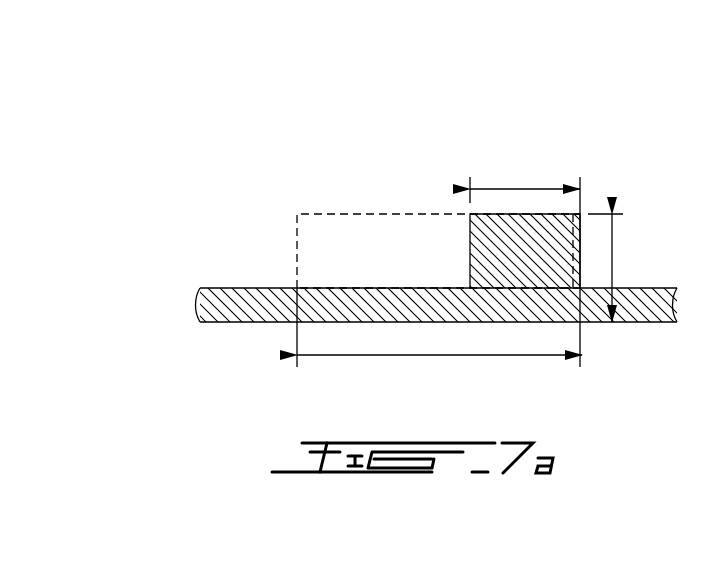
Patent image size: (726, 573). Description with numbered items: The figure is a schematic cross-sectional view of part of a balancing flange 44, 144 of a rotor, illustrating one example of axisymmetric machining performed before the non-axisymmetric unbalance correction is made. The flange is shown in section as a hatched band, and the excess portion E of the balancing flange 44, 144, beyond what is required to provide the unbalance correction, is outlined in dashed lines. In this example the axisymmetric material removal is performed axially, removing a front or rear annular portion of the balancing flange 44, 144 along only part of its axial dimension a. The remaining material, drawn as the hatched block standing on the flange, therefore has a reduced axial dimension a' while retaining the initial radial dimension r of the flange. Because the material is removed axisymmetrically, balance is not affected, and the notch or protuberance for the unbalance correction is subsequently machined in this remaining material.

The balancing flange 44 is at (428, 194).
The balancing flange 144 is at (222, 215).
The excess portion E is at (366, 218).
The reduced axial dimension a' is at (525, 258).
The axial dimension a is at (439, 339).
The radial dimension r is at (609, 268).